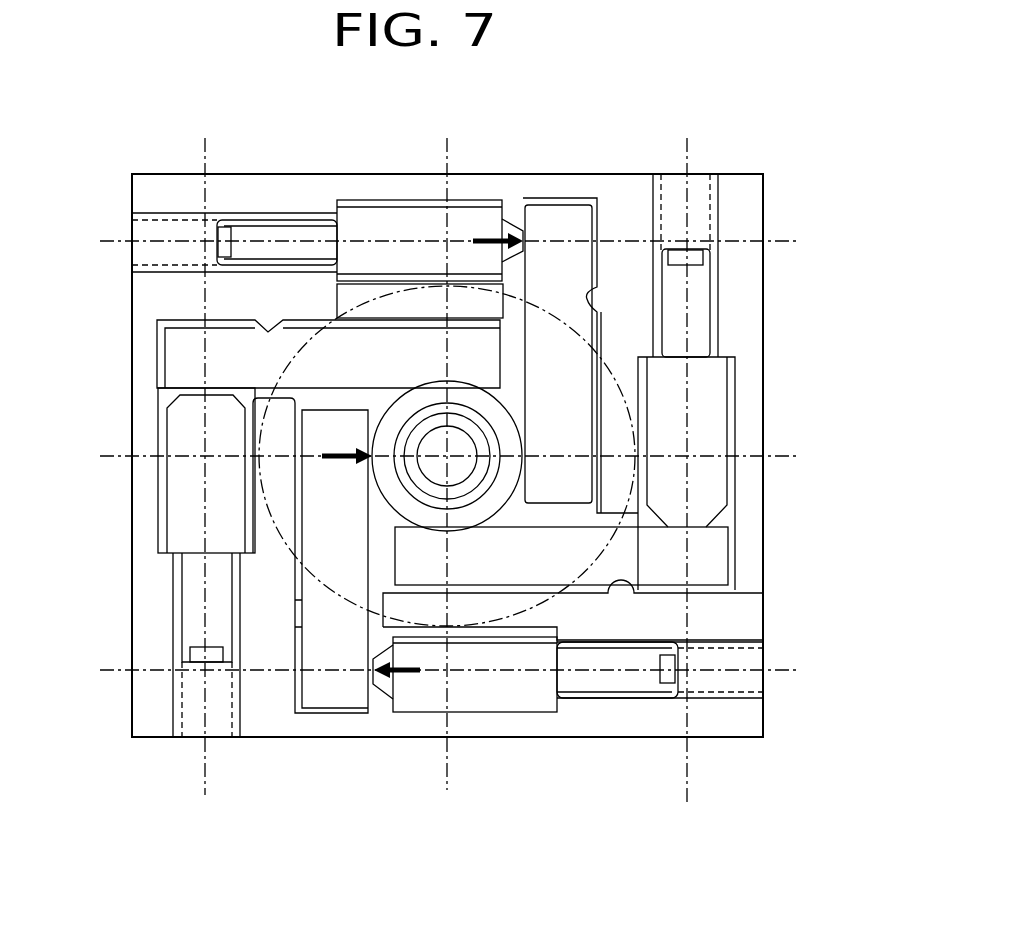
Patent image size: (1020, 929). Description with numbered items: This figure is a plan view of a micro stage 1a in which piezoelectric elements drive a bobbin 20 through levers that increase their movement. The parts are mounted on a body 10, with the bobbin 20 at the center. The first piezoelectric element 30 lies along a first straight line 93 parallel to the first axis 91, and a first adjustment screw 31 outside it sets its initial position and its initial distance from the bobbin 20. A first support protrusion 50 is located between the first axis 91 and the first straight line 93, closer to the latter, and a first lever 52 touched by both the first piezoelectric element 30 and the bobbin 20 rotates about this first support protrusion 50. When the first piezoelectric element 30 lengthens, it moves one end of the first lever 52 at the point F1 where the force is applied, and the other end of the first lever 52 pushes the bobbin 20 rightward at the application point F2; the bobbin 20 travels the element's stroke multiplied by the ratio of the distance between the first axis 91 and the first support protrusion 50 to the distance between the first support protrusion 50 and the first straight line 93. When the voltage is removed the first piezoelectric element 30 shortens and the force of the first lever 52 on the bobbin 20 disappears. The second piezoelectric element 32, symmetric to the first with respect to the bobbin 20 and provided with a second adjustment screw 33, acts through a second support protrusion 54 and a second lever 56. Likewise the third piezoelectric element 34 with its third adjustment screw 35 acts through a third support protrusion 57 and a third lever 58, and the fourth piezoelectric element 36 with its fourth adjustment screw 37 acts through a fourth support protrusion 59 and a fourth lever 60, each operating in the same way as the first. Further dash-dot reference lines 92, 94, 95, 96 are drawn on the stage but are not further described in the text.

The micro stage 1a is at (748, 139).
The body 10 is at (735, 719).
The bobbin 20 is at (500, 498).
The first piezoelectric element 30 is at (505, 697).
The first adjustment screw 31 is at (622, 686).
The second piezoelectric element 32 is at (402, 220).
The second adjustment screw 33 is at (265, 228).
The third piezoelectric element 34 is at (175, 497).
The third adjustment screw 35 is at (190, 590).
The fourth piezoelectric element 36 is at (707, 384).
The fourth adjustment screw 37 is at (700, 296).
The first support protrusion 50 is at (308, 610).
The first lever 52 is at (340, 688).
The second support protrusion 54 is at (600, 300).
The second lever 56 is at (556, 215).
The third support protrusion 57 is at (268, 330).
The third lever 58 is at (172, 355).
The fourth support protrusion 59 is at (620, 592).
The fourth lever 60 is at (712, 556).
The first axis 91 is at (115, 455).
The first vertical axis 92 is at (448, 163).
The first straight line 93 is at (116, 668).
The third horizontal axis 94 is at (118, 240).
The second vertical axis 95 is at (205, 775).
The third vertical axis 96 is at (690, 773).
The point where a force is applied F1 is at (372, 690).
The application point F2 is at (366, 440).